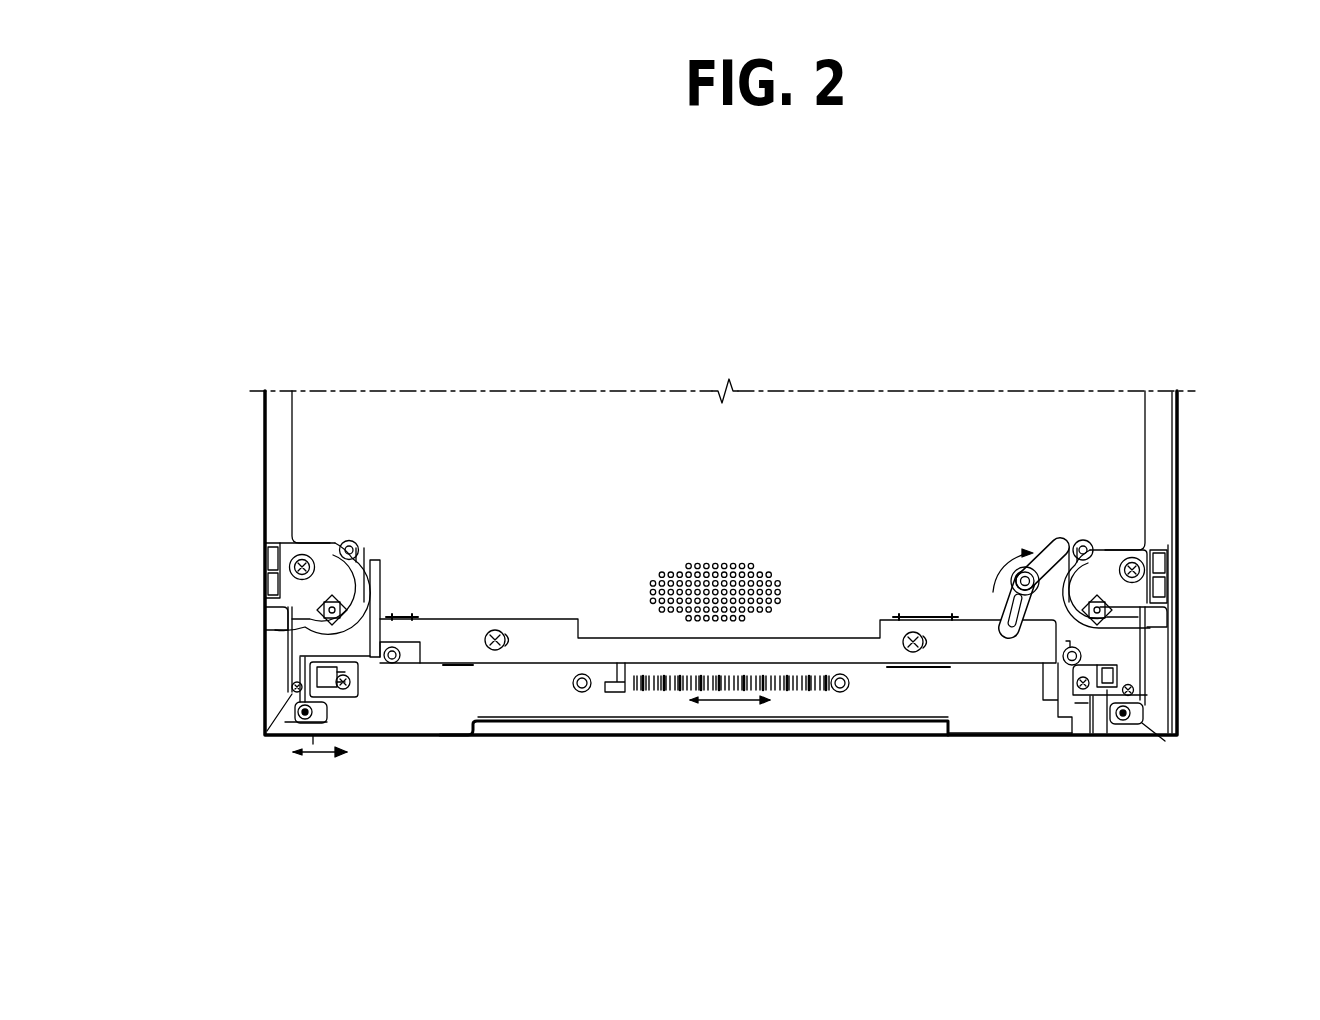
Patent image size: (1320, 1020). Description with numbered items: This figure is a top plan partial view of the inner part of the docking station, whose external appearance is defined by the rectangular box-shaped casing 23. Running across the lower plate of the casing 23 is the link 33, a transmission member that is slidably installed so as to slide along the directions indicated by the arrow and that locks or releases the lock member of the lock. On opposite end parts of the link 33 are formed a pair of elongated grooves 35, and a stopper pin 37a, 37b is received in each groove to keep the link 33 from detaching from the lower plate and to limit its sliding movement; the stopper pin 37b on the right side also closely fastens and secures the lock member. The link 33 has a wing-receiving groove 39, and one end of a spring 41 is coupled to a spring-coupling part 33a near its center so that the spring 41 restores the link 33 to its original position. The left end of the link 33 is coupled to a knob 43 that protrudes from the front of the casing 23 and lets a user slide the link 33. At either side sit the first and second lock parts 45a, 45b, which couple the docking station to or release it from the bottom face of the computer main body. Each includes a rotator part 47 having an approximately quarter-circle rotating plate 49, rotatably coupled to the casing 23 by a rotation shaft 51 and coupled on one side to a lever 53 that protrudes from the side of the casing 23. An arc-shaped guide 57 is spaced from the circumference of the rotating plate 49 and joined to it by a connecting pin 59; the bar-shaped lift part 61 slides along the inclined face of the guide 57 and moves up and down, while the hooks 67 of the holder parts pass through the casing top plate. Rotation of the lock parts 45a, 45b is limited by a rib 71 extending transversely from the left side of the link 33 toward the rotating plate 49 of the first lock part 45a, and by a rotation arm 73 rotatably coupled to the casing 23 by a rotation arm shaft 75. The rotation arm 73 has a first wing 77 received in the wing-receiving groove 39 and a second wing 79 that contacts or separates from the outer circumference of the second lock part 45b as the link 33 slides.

The casing 23 is at (265, 423).
The link 33 is at (607, 640).
The spring-coupling part 33a is at (615, 695).
The elongated groove 35 is at (320, 718).
The stopper pin 37a is at (305, 720).
The stopper pin 37b is at (1125, 720).
The wing-receiving groove 39 is at (1045, 628).
The spring 41 is at (790, 692).
The knob 43 is at (326, 758).
The first lock part 45a is at (366, 554).
The second lock part 45b is at (1073, 536).
The rotator part 47 is at (186, 473).
The rotating plate 49 is at (298, 556).
The rotation shaft 51 is at (275, 557).
The lever 53 is at (275, 592).
The guide 57 is at (305, 621).
The connecting pin 59 is at (343, 542).
The lift part 61 is at (327, 622).
The hook 67 is at (308, 690).
The rib 71 is at (382, 562).
The rotation arm 73 is at (963, 549).
The rotation arm shaft 75 is at (1038, 565).
The first wing 77 is at (1000, 612).
The second wing 79 is at (1058, 550).